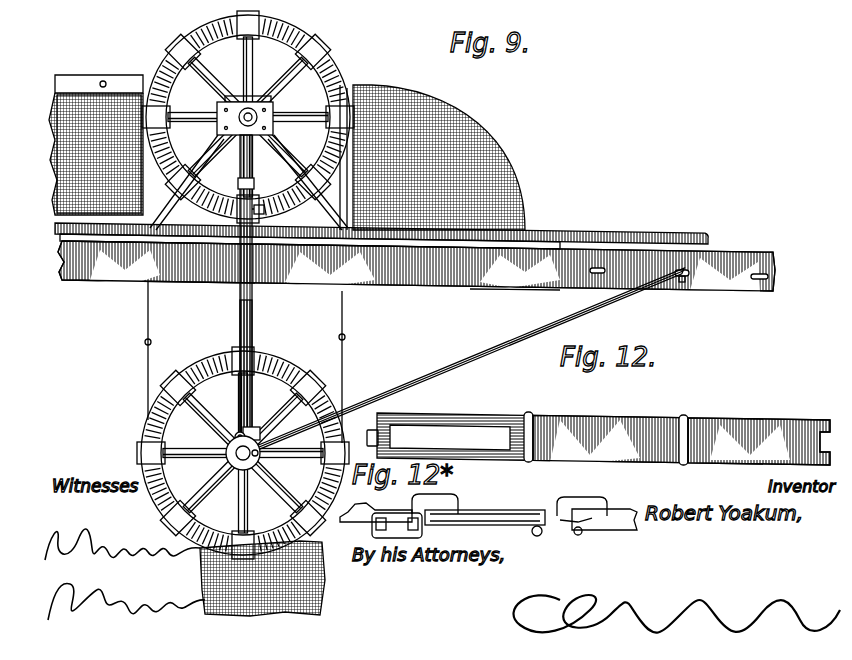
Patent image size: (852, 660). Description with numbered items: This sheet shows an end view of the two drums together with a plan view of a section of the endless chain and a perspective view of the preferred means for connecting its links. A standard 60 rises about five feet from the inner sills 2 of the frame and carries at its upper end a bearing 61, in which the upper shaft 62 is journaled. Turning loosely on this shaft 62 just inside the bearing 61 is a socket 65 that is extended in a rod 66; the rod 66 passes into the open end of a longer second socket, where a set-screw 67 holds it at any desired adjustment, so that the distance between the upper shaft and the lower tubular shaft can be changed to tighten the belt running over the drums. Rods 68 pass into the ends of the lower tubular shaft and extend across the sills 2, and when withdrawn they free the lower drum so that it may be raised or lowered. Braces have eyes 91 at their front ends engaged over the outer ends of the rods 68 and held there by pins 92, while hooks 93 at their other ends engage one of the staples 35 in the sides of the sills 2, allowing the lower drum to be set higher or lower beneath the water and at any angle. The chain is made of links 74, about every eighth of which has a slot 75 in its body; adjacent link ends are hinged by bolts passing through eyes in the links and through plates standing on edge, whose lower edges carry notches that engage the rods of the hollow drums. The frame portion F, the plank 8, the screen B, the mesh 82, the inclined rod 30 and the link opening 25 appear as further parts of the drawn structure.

In FIG. 9, the sills 2 is at (515, 293).
In FIG. 9, the plank 8 is at (590, 233).
In FIG. 12, the slot plate 25 is at (446, 436).
In FIG. 9, the connecting rod 30 is at (467, 360).
In FIG. 9, the staples 35 is at (752, 278).
In FIG. 9, the standard 60 is at (249, 182).
In FIG. 9, the bearing 61 is at (266, 110).
In FIG. 9, the shaft 62 is at (272, 129).
In FIG. 9, the socket 65 is at (253, 164).
In FIG. 9, the rod 66 is at (255, 184).
In FIG. 9, the set-screw 67 is at (266, 212).
In FIG. 9, the rods 68 is at (262, 460).
In FIG. 9, the links 74 is at (150, 300).
In FIG. 12, the links 74 is at (628, 420).
The links 74 is at (372, 506).
The slot 75 is at (490, 510).
In FIG. 9, the wire screen 82 is at (74, 141).
In FIG. 9, the eyes 91 is at (243, 453).
In FIG. 9, the pins 92 is at (250, 428).
In FIG. 9, the hooks 93 is at (688, 271).
In FIG. 9, the screen frame B is at (287, 338).
In FIG. 9, the frame beam F is at (416, 342).